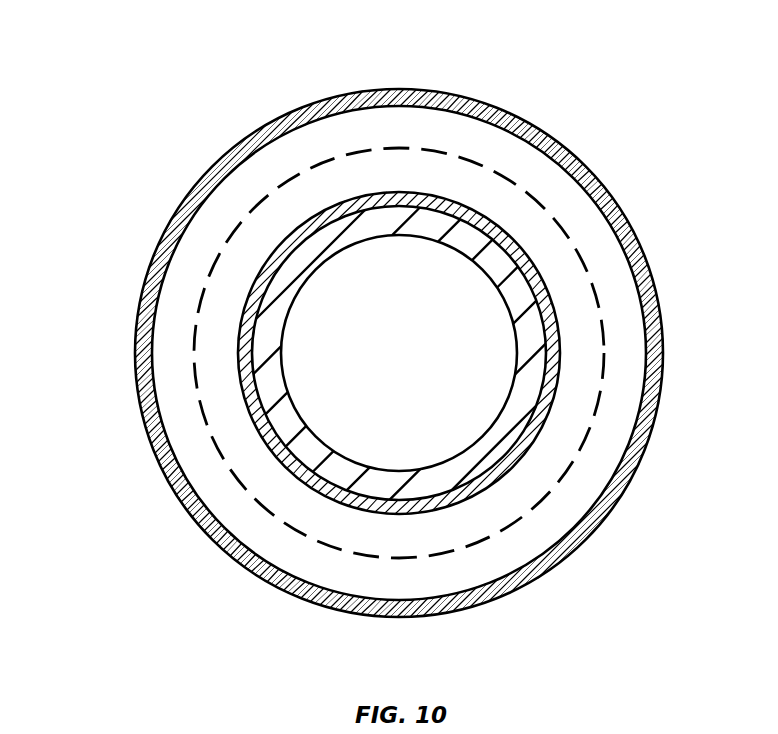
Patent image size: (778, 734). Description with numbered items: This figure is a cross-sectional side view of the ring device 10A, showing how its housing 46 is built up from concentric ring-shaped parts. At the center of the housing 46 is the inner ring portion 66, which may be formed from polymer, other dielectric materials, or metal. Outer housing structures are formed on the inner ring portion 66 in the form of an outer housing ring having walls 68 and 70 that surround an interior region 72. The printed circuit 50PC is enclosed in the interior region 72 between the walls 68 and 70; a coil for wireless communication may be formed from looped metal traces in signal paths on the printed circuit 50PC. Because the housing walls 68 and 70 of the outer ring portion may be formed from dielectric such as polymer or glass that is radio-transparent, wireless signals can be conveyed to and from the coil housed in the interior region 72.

The ring device 10A is at (112, 293).
The housing 46 is at (530, 570).
The printed circuit 50PC is at (493, 170).
The inner ring portion 66 is at (500, 295).
The wall 68 is at (523, 263).
The wall 70 is at (618, 203).
The interior region 72 is at (572, 198).